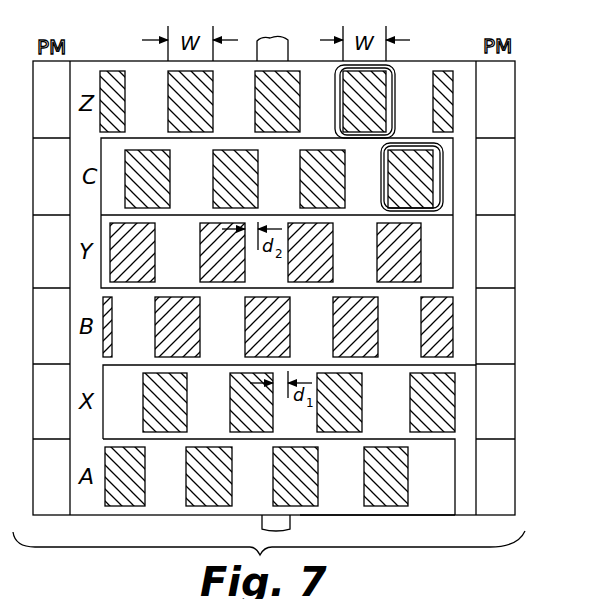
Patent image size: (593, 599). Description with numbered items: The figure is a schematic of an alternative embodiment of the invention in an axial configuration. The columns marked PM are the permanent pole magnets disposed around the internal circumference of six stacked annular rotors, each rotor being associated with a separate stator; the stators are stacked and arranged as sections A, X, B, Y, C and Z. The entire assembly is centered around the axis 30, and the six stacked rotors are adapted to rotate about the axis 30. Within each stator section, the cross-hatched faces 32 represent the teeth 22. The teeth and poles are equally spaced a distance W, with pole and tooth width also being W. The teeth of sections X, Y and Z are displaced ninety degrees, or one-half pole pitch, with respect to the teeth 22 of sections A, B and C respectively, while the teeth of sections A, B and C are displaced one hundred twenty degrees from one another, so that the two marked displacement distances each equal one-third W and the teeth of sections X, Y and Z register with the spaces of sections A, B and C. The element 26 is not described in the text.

The teeth 22 is at (456, 598).
The conductive segments 26 is at (394, 80).
The axis 30 is at (287, 40).
The cross-hatched faces 32 is at (318, 506).